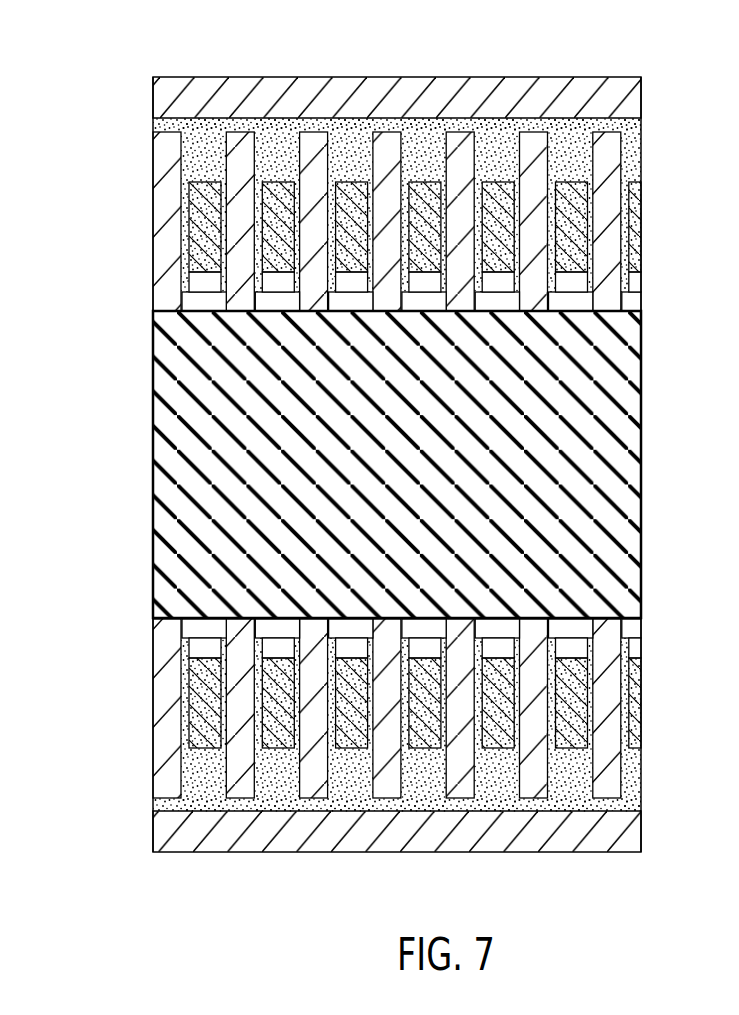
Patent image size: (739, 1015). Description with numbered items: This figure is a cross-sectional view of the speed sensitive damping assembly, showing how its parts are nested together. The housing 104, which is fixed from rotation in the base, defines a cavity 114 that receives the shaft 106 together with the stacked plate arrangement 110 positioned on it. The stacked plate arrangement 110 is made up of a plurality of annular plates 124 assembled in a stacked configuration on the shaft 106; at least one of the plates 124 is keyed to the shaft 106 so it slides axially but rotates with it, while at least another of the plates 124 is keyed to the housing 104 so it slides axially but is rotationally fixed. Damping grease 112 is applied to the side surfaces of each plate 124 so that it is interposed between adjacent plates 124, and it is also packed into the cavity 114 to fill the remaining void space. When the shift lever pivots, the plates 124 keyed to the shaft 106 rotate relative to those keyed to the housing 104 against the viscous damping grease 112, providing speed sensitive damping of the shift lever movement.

The housing 104 is at (203, 88).
The shaft 106 is at (627, 505).
The stacked plate arrangement 110 is at (114, 231).
The damping grease 112 is at (278, 127).
The cavity 114 is at (570, 814).
The plates 124 is at (351, 182).